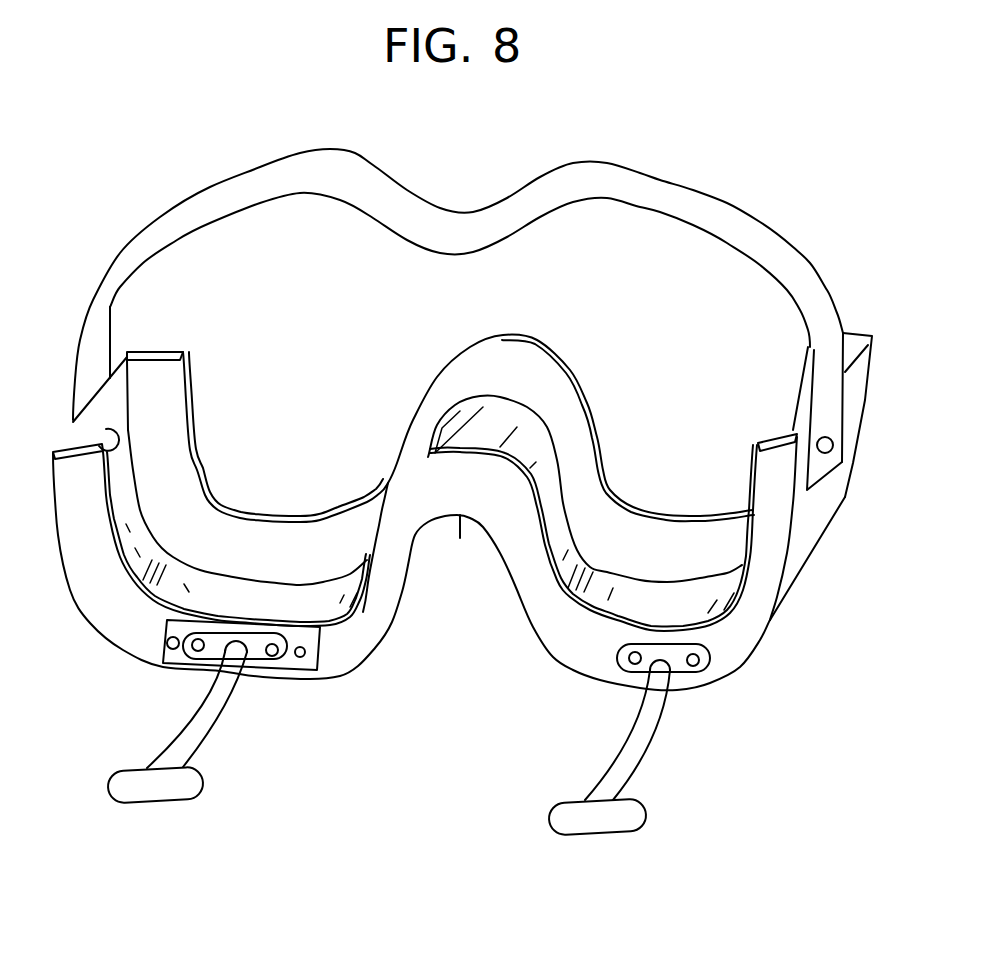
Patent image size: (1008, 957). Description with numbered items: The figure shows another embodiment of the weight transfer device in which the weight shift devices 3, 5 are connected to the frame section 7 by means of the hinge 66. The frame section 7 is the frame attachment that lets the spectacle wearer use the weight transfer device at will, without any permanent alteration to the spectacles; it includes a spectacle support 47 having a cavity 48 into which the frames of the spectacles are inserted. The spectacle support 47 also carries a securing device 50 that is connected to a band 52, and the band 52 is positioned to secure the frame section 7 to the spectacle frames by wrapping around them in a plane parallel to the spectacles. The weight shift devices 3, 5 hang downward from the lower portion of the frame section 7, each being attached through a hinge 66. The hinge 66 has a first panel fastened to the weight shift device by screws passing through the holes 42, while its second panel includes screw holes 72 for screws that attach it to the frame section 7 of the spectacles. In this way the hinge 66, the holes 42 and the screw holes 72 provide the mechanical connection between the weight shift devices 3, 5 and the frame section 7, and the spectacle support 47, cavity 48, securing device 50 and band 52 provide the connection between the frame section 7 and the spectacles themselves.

The weight shift device 3 is at (653, 742).
The weight shift device 5 is at (227, 724).
The frame section 7 is at (493, 597).
The holes 42 is at (276, 656).
The spectacle support 47 is at (497, 542).
The cavity 48 is at (173, 577).
The securing device 50 is at (73, 424).
The band 52 is at (713, 213).
The hinge 66 is at (167, 644).
The screw holes 72 is at (170, 660).